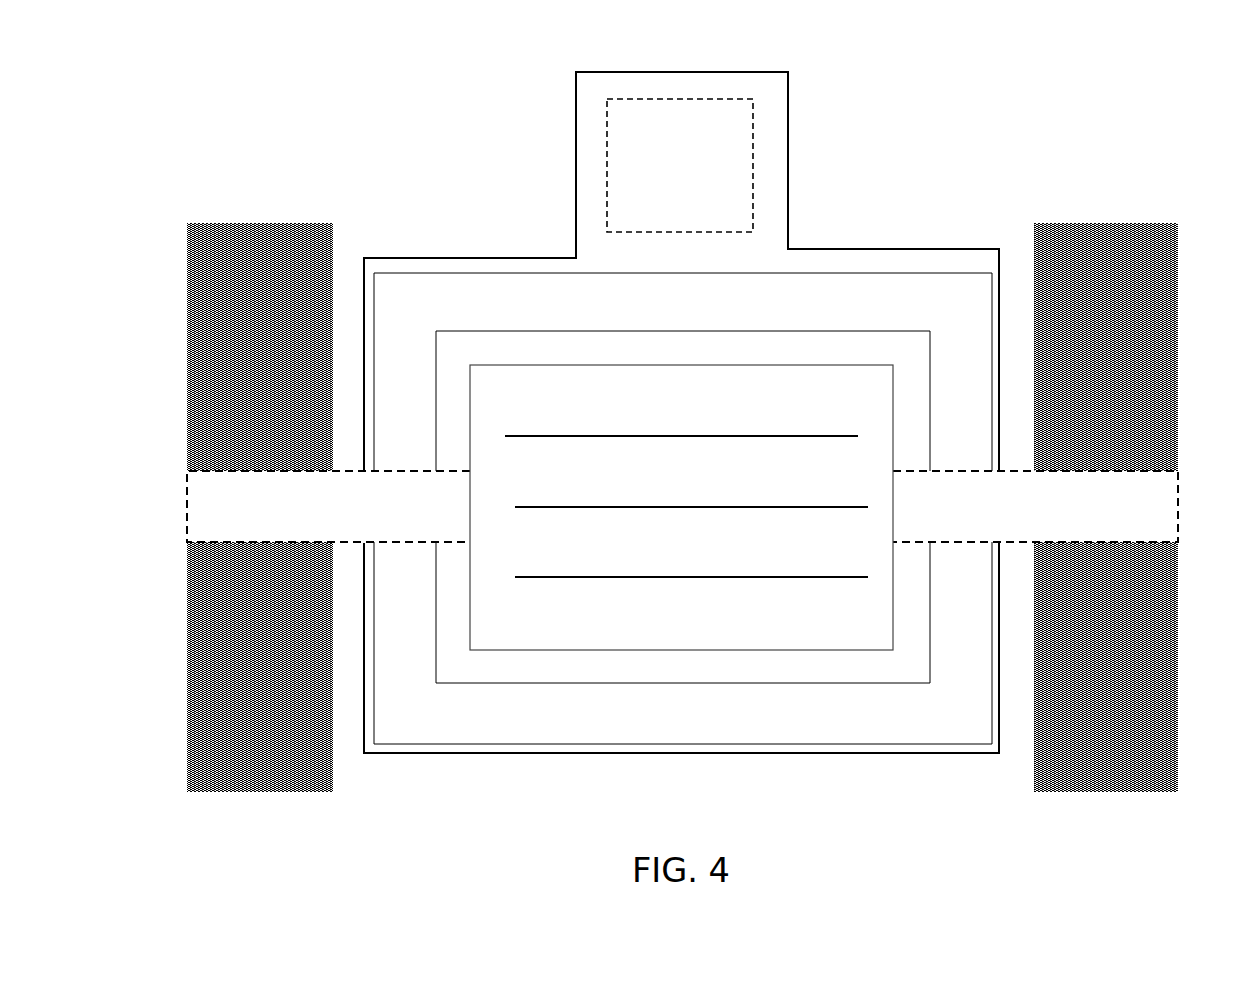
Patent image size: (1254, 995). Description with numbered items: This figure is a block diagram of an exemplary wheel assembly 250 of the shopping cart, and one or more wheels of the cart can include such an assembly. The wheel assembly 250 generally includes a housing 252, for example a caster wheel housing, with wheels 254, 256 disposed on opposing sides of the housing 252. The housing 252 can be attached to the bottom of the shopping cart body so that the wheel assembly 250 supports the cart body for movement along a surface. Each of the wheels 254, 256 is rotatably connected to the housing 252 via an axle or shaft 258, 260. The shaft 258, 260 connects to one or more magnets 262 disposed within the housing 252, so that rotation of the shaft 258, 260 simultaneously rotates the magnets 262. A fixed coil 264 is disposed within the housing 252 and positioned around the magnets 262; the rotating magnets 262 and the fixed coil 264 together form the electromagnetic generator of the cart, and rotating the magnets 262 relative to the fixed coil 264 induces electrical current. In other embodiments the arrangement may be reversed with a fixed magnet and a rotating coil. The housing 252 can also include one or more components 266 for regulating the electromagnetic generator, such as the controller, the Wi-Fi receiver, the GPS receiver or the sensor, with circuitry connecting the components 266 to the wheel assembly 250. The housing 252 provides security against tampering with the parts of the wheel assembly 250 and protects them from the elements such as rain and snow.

The wheel assembly 250 is at (886, 63).
The housing 252 is at (790, 135).
The wheel 254 is at (1180, 273).
The wheel 256 is at (187, 343).
The shaft 258 is at (1132, 470).
The shaft 260 is at (218, 472).
The magnets 262 is at (802, 365).
The fixed coil 264 is at (950, 270).
The components 266 is at (607, 163).